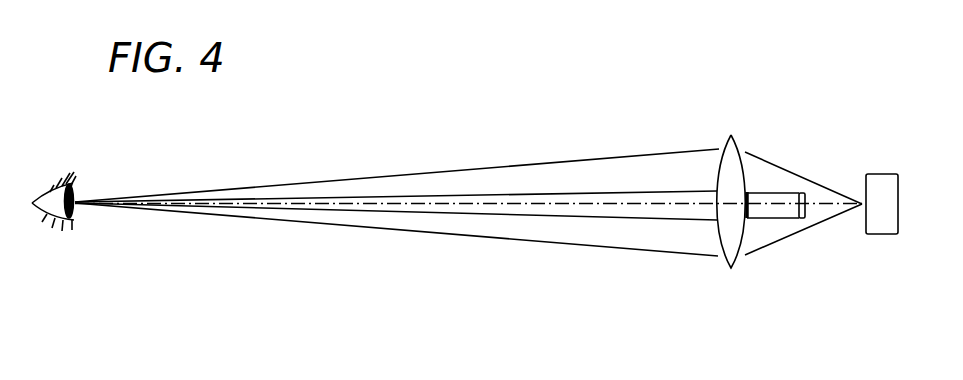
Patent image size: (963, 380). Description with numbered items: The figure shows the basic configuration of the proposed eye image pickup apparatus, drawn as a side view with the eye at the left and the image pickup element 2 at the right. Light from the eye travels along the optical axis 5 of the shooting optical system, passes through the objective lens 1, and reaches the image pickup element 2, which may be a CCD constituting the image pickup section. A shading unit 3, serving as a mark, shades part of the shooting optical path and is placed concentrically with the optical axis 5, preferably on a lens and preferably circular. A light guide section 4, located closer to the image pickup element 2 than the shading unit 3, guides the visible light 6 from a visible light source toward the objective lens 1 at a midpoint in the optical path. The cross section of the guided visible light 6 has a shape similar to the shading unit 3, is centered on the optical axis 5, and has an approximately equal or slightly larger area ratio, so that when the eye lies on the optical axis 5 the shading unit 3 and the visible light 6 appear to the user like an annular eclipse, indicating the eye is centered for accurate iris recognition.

The objective lens 1 is at (718, 243).
The image pickup element 2 is at (878, 175).
The shading unit 3 is at (752, 213).
The light guide section 4 is at (802, 193).
The optical axis 5 is at (543, 202).
The guiding visible light 6 is at (632, 192).